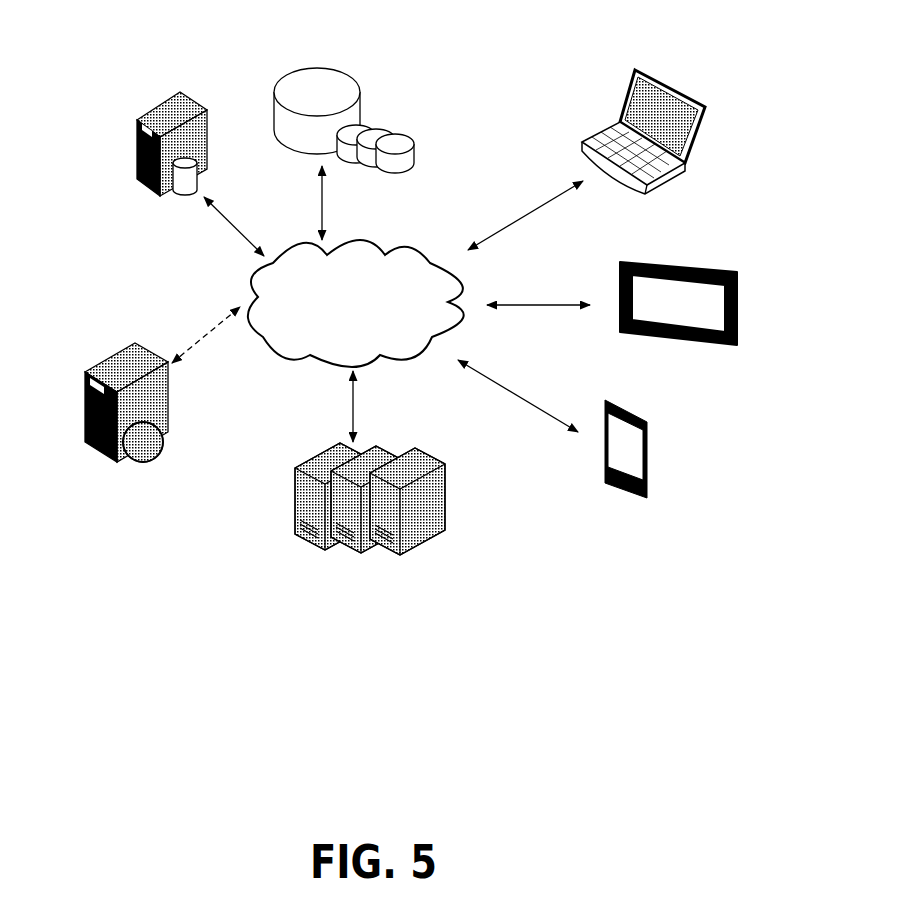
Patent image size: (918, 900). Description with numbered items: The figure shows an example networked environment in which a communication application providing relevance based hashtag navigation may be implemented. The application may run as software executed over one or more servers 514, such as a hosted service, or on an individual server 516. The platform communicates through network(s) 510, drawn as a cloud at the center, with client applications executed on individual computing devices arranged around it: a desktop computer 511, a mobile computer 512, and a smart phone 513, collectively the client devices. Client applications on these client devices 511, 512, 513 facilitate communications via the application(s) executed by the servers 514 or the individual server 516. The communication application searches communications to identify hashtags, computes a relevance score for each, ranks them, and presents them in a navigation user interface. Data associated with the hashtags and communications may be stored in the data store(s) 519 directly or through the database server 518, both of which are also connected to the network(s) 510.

The network(s) 510 is at (358, 230).
The desktop computer 511 is at (676, 68).
The mobile computer 512 is at (711, 241).
The smart phone 513 is at (655, 416).
The servers 514 is at (319, 446).
The individual server 516 is at (104, 351).
The database server 518 is at (173, 204).
The data store(s) 519 is at (333, 46).